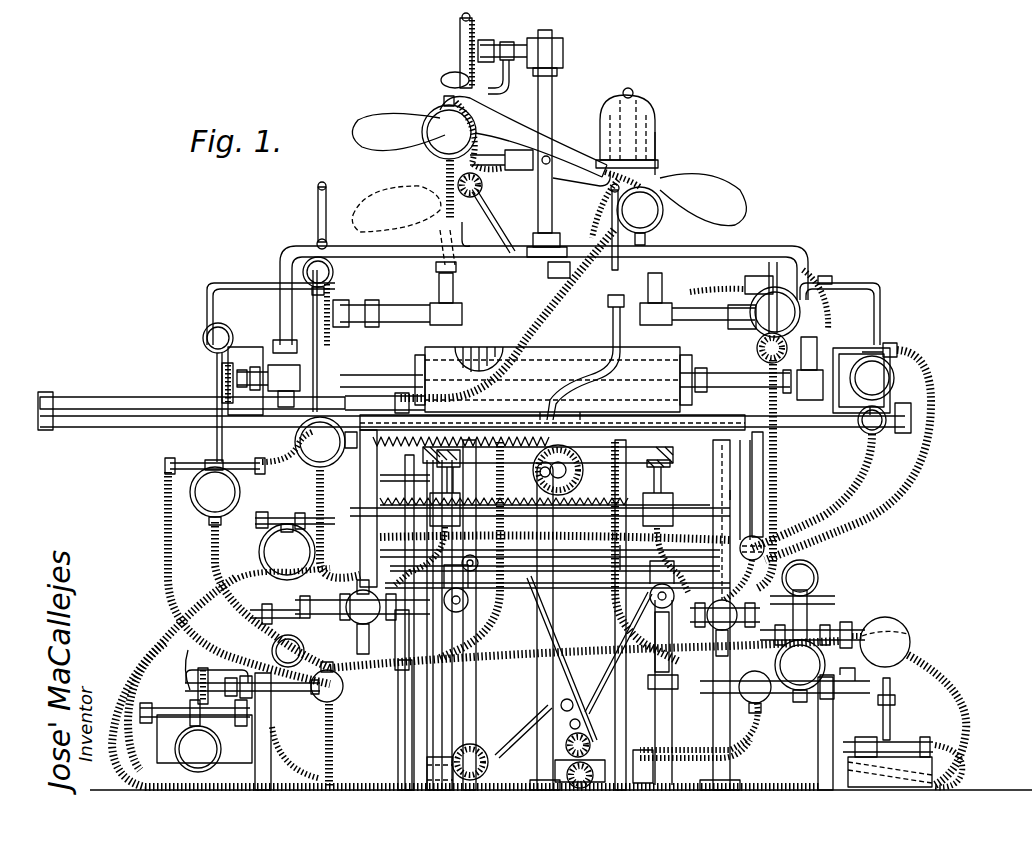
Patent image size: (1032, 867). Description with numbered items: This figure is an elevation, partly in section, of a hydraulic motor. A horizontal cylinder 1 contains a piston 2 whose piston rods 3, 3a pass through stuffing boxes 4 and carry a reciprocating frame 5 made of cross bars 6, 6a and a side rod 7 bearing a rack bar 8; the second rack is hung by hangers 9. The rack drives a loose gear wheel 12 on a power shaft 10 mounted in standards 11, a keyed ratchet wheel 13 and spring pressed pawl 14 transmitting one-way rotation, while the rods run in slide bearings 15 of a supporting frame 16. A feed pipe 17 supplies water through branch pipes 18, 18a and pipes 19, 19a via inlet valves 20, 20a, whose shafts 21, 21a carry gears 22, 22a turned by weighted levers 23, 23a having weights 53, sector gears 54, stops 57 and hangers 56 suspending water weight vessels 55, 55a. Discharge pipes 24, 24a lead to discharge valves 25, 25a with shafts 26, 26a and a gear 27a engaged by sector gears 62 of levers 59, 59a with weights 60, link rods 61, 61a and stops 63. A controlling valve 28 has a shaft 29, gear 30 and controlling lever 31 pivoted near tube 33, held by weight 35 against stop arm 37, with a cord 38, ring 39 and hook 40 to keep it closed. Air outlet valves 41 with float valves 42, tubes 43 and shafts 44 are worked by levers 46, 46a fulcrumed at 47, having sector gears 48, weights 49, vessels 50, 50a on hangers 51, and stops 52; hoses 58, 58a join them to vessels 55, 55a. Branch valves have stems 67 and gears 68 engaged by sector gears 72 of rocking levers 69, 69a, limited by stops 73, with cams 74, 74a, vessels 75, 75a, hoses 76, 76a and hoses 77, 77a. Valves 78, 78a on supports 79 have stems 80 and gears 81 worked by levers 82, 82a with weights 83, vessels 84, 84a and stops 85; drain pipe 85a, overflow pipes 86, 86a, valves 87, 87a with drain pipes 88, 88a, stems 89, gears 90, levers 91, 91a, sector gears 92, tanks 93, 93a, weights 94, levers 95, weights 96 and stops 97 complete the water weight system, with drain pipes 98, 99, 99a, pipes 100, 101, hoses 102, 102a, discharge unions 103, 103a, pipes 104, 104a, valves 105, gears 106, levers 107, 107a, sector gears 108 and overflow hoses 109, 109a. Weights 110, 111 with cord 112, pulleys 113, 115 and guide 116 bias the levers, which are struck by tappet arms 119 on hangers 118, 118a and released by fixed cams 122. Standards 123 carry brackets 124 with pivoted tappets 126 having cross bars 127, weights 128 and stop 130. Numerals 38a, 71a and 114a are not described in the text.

The cylinder 1 is at (533, 385).
The piston 2 is at (478, 352).
The piston rod 3 is at (136, 397).
The piston rod 3a is at (728, 326).
The stuffing box 4 is at (400, 393).
The frame 5 is at (835, 422).
The cross bar 6 is at (38, 420).
The cross bar 6a is at (912, 426).
The side rod 7 is at (114, 430).
The rack bar 8 is at (400, 446).
The hanger 9 is at (568, 478).
The power shaft 10 is at (585, 472).
The standard 11 is at (553, 555).
The loose gear wheel 12 is at (470, 550).
The ratchet wheel 13 is at (570, 420).
The spring pressed pawl 14 is at (545, 415).
The slide bearing 15 is at (730, 425).
The supporting frame 16 is at (730, 470).
The feed pipe 17 is at (556, 32).
The branch pipe 18 is at (398, 248).
The branch pipe 18a is at (766, 250).
The pipe 19 is at (370, 395).
The pipe 19a is at (710, 382).
The inlet valve 20 is at (282, 365).
The inlet valve 20a is at (824, 368).
The operating shaft 21 is at (250, 372).
The operating shaft 21a is at (896, 376).
The gear 22 is at (222, 372).
The gear 22a is at (918, 354).
The lever 23 is at (212, 440).
The lever 23a is at (866, 350).
The discharge pipe 24 is at (545, 493).
The discharge pipe 24a is at (730, 495).
The discharge valve 25 is at (440, 540).
The discharge valve 25a is at (655, 520).
The shaft 26 is at (316, 494).
The shaft 26a is at (777, 512).
The gear 27a is at (782, 496).
The controlling valve 28 is at (565, 54).
The shaft 29 is at (490, 48).
The gear 30 is at (462, 22).
The controlling lever 31 is at (460, 47).
The tube 33 is at (522, 46).
The weight 35 is at (442, 80).
The stop arm 37 is at (494, 90).
The cord 38 is at (480, 186).
The gear 38a is at (424, 480).
The ring or link 39 is at (495, 196).
The hook 40 is at (469, 228).
The air outlet valve 41 is at (455, 312).
The float valve 42 is at (438, 290).
The tube 43 is at (405, 320).
The shaft 44 is at (355, 305).
The lever 46 is at (313, 322).
The lever 46a is at (802, 292).
The fulcrum 47 is at (766, 345).
The sector gear 48 is at (372, 300).
The weight 49 is at (308, 264).
The water weight vessel 50 is at (320, 442).
The water weight vessel 50a is at (822, 285).
The hanger 51 is at (272, 460).
The stop 52 is at (280, 283).
The weight 53 is at (204, 342).
The sector gear 54 is at (220, 390).
The water weight vessel 55 is at (215, 496).
The water weight vessel 55a is at (895, 382).
The hanger 56 is at (172, 462).
The stop 57 is at (205, 414).
The flexible hose 58 is at (262, 512).
The flexible hose 58a is at (840, 296).
The lever 59 is at (310, 518).
The lever 59a is at (790, 540).
The weight 60 is at (352, 440).
The link rod 61 is at (312, 565).
The link rod 61a is at (782, 445).
The sector gear 62 is at (542, 559).
The stop 63 is at (432, 505).
The stem 67 is at (553, 215).
The gear 68 is at (530, 244).
The rocking lever 69 is at (565, 182).
The rocking lever 69a is at (655, 172).
The hose 71a is at (660, 303).
The sector gear 72 is at (603, 118).
The stop 73 is at (510, 130).
The cam 74 is at (372, 130).
The cam 74a is at (745, 205).
The water weight vessel 75 is at (660, 212).
The water weight vessel 75a is at (430, 150).
The flexible hose 76 is at (690, 158).
The flexible hose 76a is at (440, 113).
The flexible hose 77 is at (560, 278).
The flexible hose 77a is at (425, 190).
The valve 78 is at (355, 598).
The valve 78a is at (715, 645).
The support 79 is at (400, 625).
The stem 80 is at (832, 598).
The gear 81 is at (830, 630).
The lever 82 is at (280, 612).
The lever 82a is at (862, 634).
The weight 83 is at (822, 562).
The water weight vessel 84 is at (262, 556).
The water weight vessel 84a is at (800, 671).
The stop 85 is at (245, 615).
The flexible drain pipe 85a is at (845, 505).
The flexible overflow pipe 86 is at (165, 551).
The flexible overflow pipe 86a is at (872, 530).
The valve 87 is at (320, 698).
The valve 87a is at (772, 700).
The flexible drain pipe 88 is at (300, 580).
The flexible drain pipe 88a is at (846, 562).
The stem 89 is at (218, 670).
The gear 90 is at (200, 686).
The lever 91 is at (188, 655).
The lever 91a is at (893, 718).
The sector gear 92 is at (128, 690).
The water weight tank 93 is at (160, 745).
The water weight tank 93a is at (890, 771).
The weight 94 is at (195, 736).
The lever 95 is at (892, 700).
The weight 96 is at (910, 640).
The stop 97 is at (842, 672).
The flexible drain pipe 98 is at (615, 640).
The flexible drain pipe 99 is at (333, 742).
The flexible drain pipe 99a is at (840, 745).
The flexible pipe or hose 100 is at (295, 760).
The pipe 101 is at (790, 762).
The flexible hose 102 is at (335, 785).
The pipe 102a is at (640, 750).
The discharge union 103 is at (595, 762).
The discharge union 103a is at (576, 775).
The flexible drain pipe 104 is at (402, 700).
The flexible drain pipe 104a is at (712, 740).
The valve 105 is at (505, 745).
The gear 106 is at (588, 745).
The lever 107 is at (568, 660).
The lever 107a is at (540, 655).
The sector gear 108 is at (592, 720).
The overflow hose 109 is at (160, 645).
The overflow hose 109a is at (945, 668).
The weight 110 is at (640, 700).
The weight 111 is at (648, 682).
The cord 112 is at (445, 670).
The direction pulley 113 is at (557, 543).
The rod 114a is at (580, 588).
The pulley 115 is at (458, 605).
The vertical guide 116 is at (452, 688).
The hanger 118 is at (555, 526).
The hanger 118a is at (545, 568).
The tappet arm 119 is at (528, 585).
The fixed cam 122 is at (615, 565).
The standard 123 is at (395, 390).
The U-shaped bracket 124 is at (620, 262).
The tappet 126 is at (318, 212).
The cross bar 127 is at (340, 176).
The weight 128 is at (606, 312).
The stop 130 is at (380, 222).